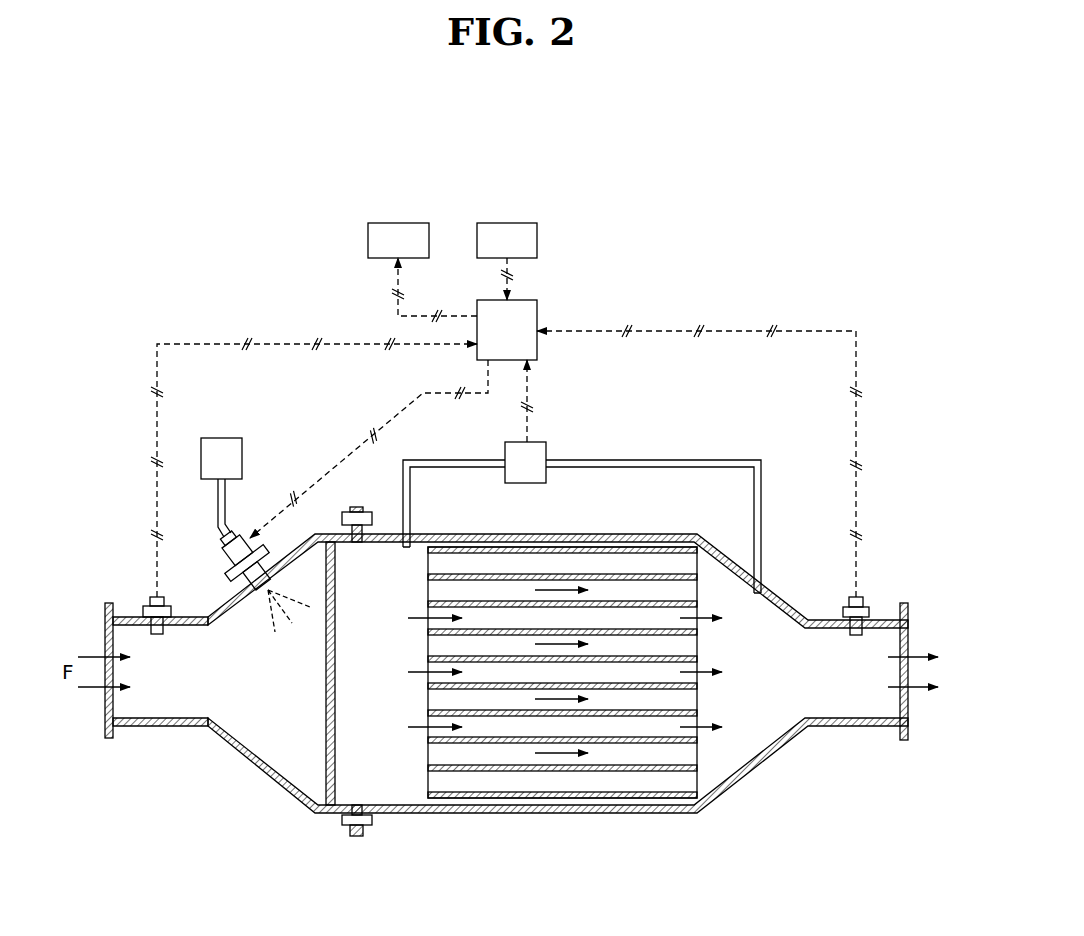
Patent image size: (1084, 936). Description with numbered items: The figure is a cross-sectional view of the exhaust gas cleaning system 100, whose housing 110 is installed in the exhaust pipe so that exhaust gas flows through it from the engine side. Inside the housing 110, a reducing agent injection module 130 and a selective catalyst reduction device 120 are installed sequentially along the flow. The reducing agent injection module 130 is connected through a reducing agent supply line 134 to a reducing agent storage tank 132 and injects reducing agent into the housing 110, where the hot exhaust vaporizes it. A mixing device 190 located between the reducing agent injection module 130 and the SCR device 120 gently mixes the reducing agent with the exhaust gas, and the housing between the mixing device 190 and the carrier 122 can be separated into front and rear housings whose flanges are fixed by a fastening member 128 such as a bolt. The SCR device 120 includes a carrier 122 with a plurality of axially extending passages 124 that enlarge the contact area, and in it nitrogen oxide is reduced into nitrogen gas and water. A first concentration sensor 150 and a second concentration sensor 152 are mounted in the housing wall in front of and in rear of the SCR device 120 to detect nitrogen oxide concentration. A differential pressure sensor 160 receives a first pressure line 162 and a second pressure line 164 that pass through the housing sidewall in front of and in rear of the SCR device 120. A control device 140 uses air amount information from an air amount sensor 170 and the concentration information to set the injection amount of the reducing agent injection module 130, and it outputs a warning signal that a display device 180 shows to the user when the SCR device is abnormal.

The exhaust gas cleaning system 100 is at (247, 812).
The housing 110 is at (146, 727).
The selective catalyst reduction (SCR) device 120 is at (565, 724).
The carrier 122 is at (581, 799).
The passages 124 is at (633, 782).
The fastening member 128 is at (346, 838).
The reducing agent injection module 130 is at (228, 568).
The reducing agent storage tank 132 is at (221, 438).
The reducing agent supply line 134 is at (218, 497).
The control device 140 is at (537, 304).
The first concentration sensor 150 is at (148, 601).
The second concentration sensor 152 is at (856, 596).
The differential pressure sensor 160 is at (540, 442).
The first pressure line 162 is at (468, 467).
The second pressure line 164 is at (630, 467).
The air amount sensor 170 is at (537, 239).
The display device 180 is at (368, 241).
The mixing device 190 is at (330, 772).